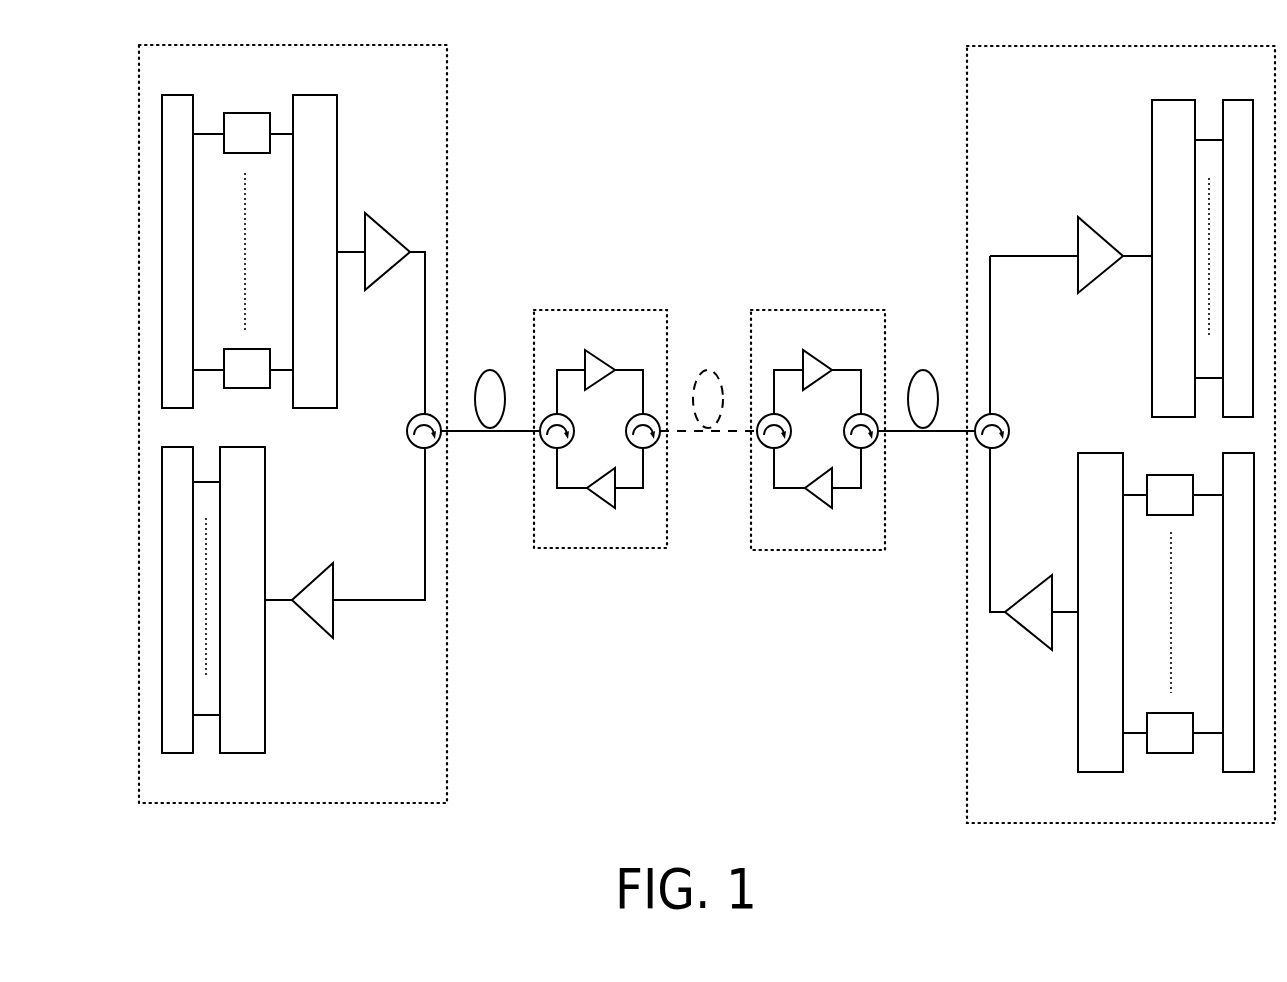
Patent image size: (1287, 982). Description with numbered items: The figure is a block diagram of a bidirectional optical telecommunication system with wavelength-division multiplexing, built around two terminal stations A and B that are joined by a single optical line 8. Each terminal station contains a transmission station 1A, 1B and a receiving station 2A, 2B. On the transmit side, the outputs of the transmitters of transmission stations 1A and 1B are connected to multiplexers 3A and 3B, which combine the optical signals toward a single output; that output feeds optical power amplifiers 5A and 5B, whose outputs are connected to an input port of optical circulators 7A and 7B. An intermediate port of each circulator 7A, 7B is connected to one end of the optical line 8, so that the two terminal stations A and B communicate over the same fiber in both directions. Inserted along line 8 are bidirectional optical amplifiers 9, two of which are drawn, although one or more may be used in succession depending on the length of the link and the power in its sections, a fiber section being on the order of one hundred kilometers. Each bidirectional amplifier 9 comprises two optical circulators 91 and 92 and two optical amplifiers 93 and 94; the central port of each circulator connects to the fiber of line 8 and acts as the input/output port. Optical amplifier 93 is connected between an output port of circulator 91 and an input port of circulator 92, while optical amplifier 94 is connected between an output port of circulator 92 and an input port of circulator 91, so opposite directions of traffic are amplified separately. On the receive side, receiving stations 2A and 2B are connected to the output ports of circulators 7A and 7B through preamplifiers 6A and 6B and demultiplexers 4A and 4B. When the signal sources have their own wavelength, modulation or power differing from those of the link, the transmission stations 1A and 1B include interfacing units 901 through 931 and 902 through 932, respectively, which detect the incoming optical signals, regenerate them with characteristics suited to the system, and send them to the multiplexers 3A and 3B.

The terminal station A is at (455, 127).
The terminal station B is at (960, 132).
The transmission station 1A is at (181, 91).
The receiving station 2A is at (173, 758).
The multiplexer 3A is at (316, 91).
The demultiplexer 4A is at (244, 758).
The optical power amplifier 5A is at (394, 222).
The preamplifier 6A is at (307, 628).
The optical circulator 7A is at (404, 438).
The transmission station 1B is at (1239, 778).
The receiving station 2B is at (1235, 96).
The multiplexer 3B is at (1100, 778).
The demultiplexer 4B is at (1175, 96).
The optical power amplifier 5B is at (1023, 640).
The preamplifier 6B is at (1107, 227).
The optical circulator 7B is at (1012, 421).
The optical line 8 is at (492, 363).
The bidirectional optical amplifier 9 is at (550, 305).
The optical circulator 91 is at (576, 440).
The optical circulator 92 is at (622, 428).
The optical amplifier 93 is at (602, 352).
The optical amplifier 94 is at (597, 507).
The interfacing unit 901 is at (246, 109).
The interfacing unit 931 is at (247, 393).
The interfacing unit 902 is at (1165, 472).
The interfacing unit 932 is at (1172, 760).